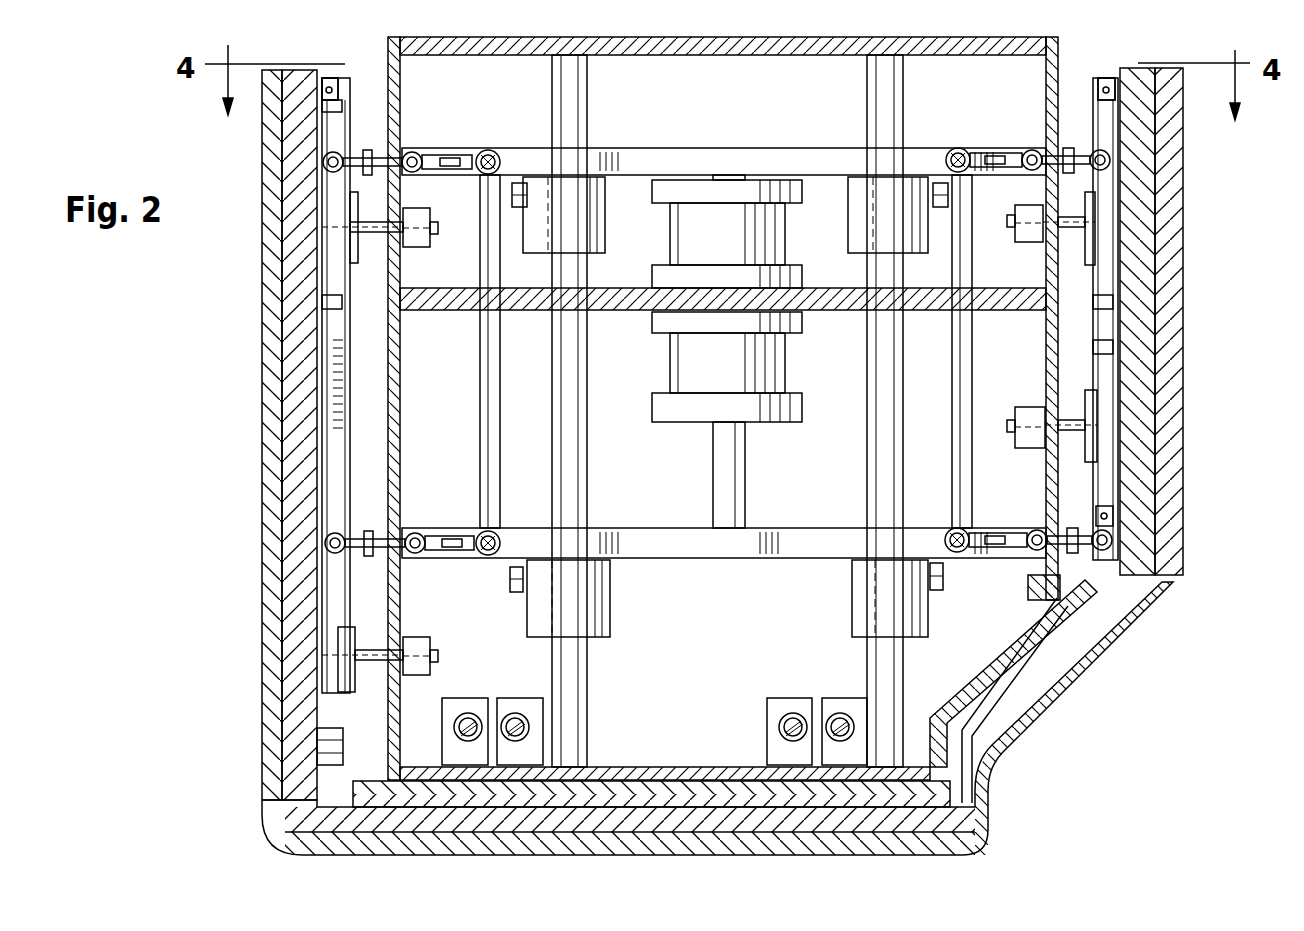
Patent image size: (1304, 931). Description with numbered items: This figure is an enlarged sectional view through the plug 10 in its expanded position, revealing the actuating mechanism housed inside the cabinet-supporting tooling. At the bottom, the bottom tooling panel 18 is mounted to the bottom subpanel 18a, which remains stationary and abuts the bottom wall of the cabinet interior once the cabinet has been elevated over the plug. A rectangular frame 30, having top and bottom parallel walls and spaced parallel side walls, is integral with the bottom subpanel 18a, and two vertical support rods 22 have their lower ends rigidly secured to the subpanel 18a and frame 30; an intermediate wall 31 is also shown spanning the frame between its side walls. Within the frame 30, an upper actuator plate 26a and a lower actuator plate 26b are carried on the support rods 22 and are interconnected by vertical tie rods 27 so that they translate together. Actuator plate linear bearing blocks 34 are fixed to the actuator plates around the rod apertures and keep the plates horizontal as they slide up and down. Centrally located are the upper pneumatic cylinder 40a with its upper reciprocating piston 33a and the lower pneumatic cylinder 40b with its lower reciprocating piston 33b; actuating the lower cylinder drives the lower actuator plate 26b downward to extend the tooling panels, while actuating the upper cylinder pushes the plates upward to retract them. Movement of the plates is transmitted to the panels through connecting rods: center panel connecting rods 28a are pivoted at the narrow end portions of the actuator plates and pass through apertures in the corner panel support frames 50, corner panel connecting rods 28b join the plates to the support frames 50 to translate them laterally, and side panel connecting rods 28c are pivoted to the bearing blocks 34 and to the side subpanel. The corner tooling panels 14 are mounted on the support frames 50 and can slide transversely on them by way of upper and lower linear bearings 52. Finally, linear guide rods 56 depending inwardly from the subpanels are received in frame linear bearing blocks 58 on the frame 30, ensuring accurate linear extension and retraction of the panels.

The plug 10 is at (1204, 188).
The corner tooling panel 14 is at (268, 505).
The bottom tooling panel 18 is at (585, 855).
The bottom subpanel 18a is at (668, 800).
The vertical support rod 22 is at (588, 466).
The upper actuator plate 26a is at (642, 157).
The lower actuator plate 26b is at (697, 560).
The vertical tie rod 27 is at (482, 450).
The center panel connecting rod 28a is at (400, 138).
The corner panel connecting rod 28b is at (482, 148).
The side panel connecting rod 28c is at (517, 182).
The frame 30 is at (812, 62).
The intermediate plate 31 is at (456, 296).
The upper reciprocating piston 33a is at (722, 176).
The lower reciprocating piston 33b is at (746, 480).
The actuator plate linear bearing block 34 is at (604, 230).
The upper pneumatic cylinder 40a is at (785, 235).
The lower pneumatic cylinder 40b is at (785, 360).
The corner panel support frame 50 is at (346, 376).
The linear bearing 52 is at (337, 82).
The linear guide rod 56 is at (438, 229).
The frame linear bearing block 58 is at (420, 250).